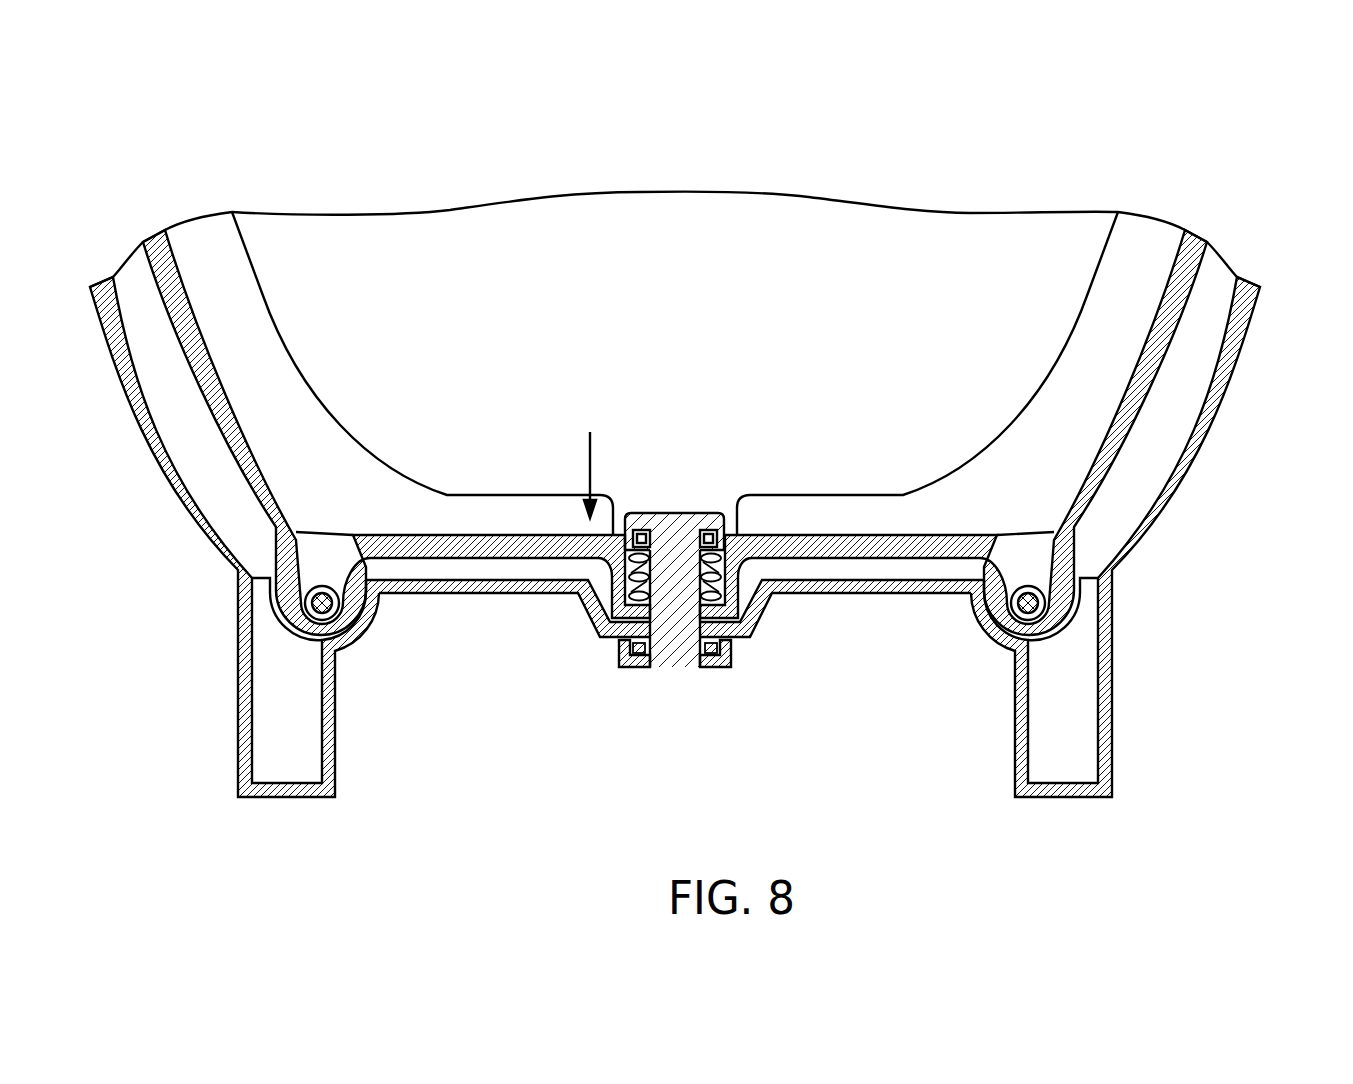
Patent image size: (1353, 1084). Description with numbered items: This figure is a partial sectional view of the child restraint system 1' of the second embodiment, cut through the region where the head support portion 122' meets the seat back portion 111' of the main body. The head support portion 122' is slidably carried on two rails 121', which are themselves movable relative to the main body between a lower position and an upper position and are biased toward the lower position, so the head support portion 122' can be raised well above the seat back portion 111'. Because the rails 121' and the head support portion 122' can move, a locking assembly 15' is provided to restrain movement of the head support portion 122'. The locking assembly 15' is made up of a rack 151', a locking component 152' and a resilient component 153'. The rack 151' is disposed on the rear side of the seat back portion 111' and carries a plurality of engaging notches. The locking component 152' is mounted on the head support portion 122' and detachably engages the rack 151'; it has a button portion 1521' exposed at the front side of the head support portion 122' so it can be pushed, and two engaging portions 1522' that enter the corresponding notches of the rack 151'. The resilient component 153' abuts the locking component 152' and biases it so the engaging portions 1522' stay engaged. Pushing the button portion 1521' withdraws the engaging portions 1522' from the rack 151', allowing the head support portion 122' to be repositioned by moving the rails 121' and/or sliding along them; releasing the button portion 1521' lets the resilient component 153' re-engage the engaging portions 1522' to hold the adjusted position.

The child restraint system 1' is at (702, 439).
The seat back portion 111' is at (675, 632).
The rail 121' is at (675, 477).
The head support portion 122' is at (675, 432).
The locking assembly 15' is at (669, 566).
The rack 151' is at (732, 666).
The locking component 152' is at (714, 556).
The button portion 1521' is at (714, 462).
The engaging portion 1522' is at (650, 699).
The resilient component 153' is at (738, 596).